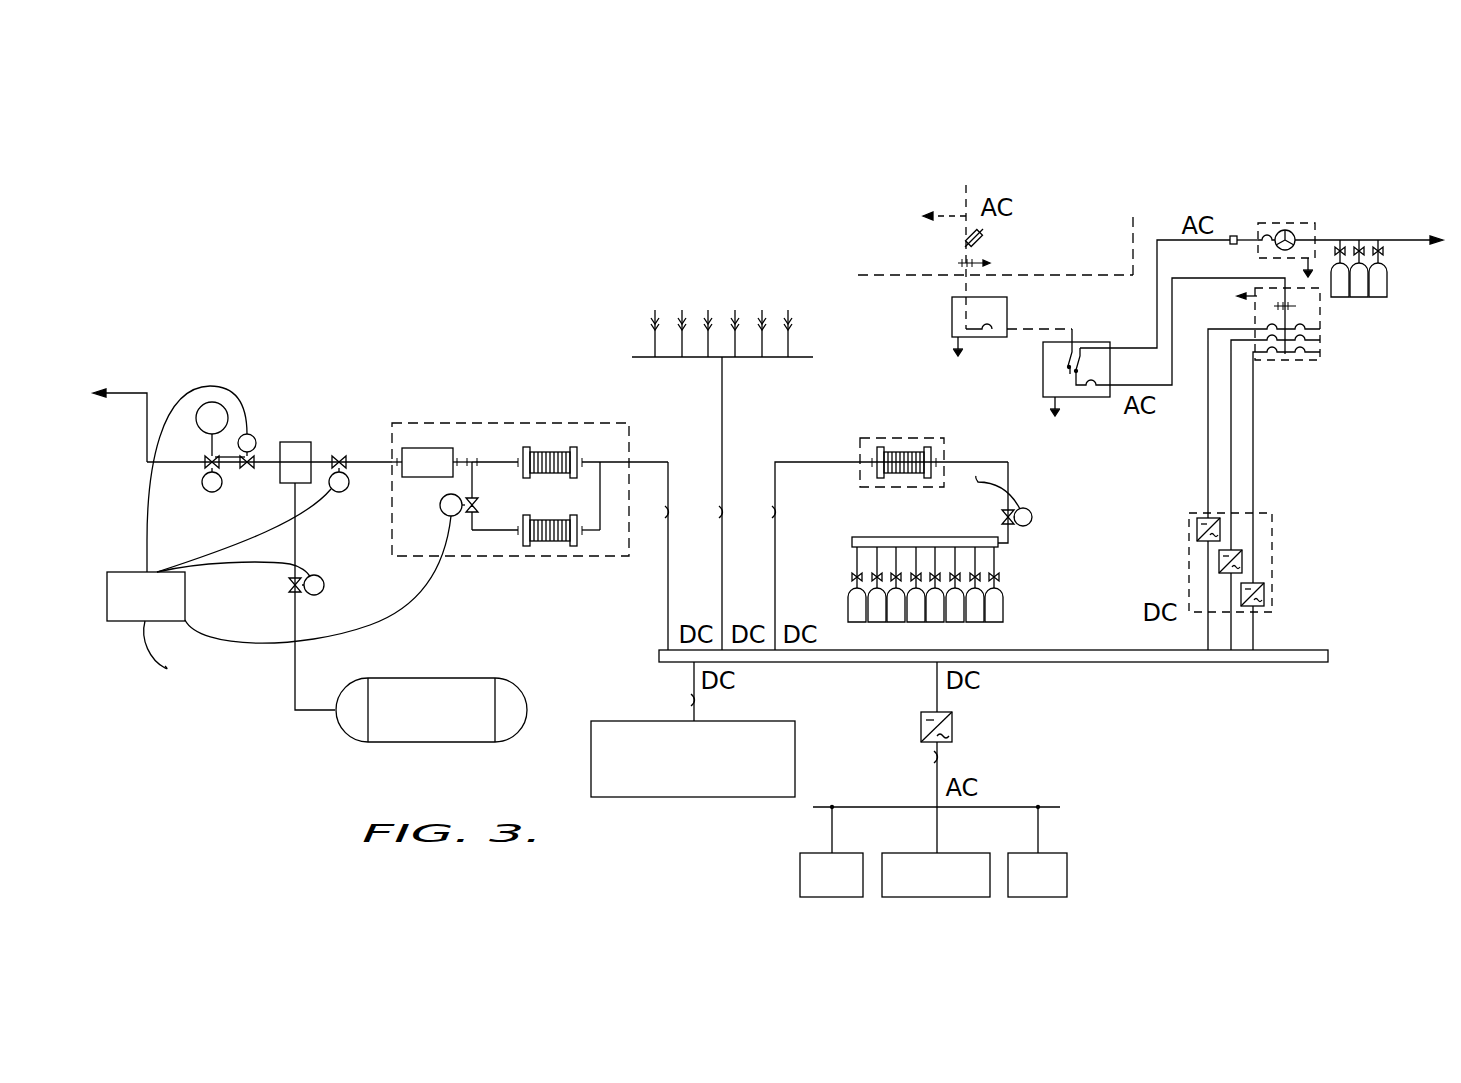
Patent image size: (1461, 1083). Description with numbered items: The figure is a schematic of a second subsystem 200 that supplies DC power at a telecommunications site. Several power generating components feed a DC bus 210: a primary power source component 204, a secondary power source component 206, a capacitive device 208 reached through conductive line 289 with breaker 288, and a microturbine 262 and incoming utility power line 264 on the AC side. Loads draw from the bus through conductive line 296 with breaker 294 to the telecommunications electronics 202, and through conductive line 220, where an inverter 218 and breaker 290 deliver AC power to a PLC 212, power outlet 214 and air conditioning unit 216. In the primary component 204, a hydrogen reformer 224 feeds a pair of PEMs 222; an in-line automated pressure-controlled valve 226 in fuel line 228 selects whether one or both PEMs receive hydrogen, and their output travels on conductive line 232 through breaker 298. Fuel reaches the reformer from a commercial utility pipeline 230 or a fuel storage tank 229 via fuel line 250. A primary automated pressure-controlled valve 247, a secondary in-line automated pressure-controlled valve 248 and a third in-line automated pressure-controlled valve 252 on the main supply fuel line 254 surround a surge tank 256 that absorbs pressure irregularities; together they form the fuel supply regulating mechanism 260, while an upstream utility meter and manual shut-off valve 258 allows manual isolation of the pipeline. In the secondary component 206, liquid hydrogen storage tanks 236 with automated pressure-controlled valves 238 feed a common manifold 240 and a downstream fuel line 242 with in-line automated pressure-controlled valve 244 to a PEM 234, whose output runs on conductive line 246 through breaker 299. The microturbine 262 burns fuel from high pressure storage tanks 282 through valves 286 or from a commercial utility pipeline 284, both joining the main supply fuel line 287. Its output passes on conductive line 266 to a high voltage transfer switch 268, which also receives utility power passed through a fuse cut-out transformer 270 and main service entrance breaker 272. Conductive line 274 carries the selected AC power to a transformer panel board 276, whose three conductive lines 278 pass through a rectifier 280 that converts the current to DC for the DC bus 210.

The second subsystem 200 is at (928, 137).
The telecommunications electronics 202 is at (695, 799).
The primary power source component 204 is at (606, 423).
The secondary power source component 206 is at (927, 438).
The capacitive device 208 is at (729, 277).
The DC bus 210 is at (1190, 665).
The PLC 212 is at (185, 616).
The power outlet 214 is at (940, 899).
The air conditioning unit 216 is at (1038, 899).
The inverter 218 is at (920, 732).
The conductive line 220 is at (934, 686).
The PEMs 222 is at (549, 446).
The hydrogen reformer 224 is at (428, 448).
The in-line automated pressure-controlled valve 226 is at (480, 505).
The fuel line 228 is at (478, 532).
The fuel storage tank 229 is at (446, 678).
The commercial utility pipeline 230 is at (127, 391).
The conductive line 232 is at (657, 462).
The PEM 234 is at (878, 447).
The liquid hydrogen storage tanks 236 is at (1003, 608).
The automated pressure-controlled valves 238 is at (1000, 575).
The common manifold 240 is at (888, 537).
The downstream fuel line 242 is at (1010, 464).
The in-line automated pressure-controlled valve 244 is at (1000, 518).
The conductive line 246 is at (799, 462).
The primary automated pressure-controlled valve 247 is at (249, 468).
The secondary in-line automated pressure-controlled valve 248 is at (288, 587).
The fuel line 250 is at (297, 612).
The third in-line automated pressure-controlled valve 252 is at (341, 455).
The main supply fuel line 254 is at (373, 458).
The surge tank 256 is at (295, 442).
The utility meter and manual shut-off valve 258 is at (211, 402).
The fuel supply regulating mechanism 260 is at (304, 335).
The microturbine 262 is at (1281, 222).
The incoming utility power line 264 is at (968, 188).
The conductive line 266 is at (1167, 232).
The high voltage transfer switch 268 is at (1087, 342).
The fuse cut-out transformer 270 is at (984, 241).
The main service entrance breaker 272 is at (1008, 304).
The conductive line 274 is at (1172, 310).
The transformer panel board 276 is at (1322, 350).
The conductive lines 278 is at (1207, 413).
The rectifier 280 is at (1273, 553).
The high pressure storage tanks 282 is at (1378, 300).
The commercial utility pipeline 284 is at (1400, 240).
The valves 286 is at (1384, 252).
The main supply fuel line 287 is at (1350, 236).
The breaker 288 is at (726, 515).
The conductive line 289 is at (723, 396).
The breaker 290 is at (944, 760).
The breaker 294 is at (698, 702).
The conductive line 296 is at (692, 712).
The breaker 298 is at (672, 515).
The breaker 299 is at (779, 515).